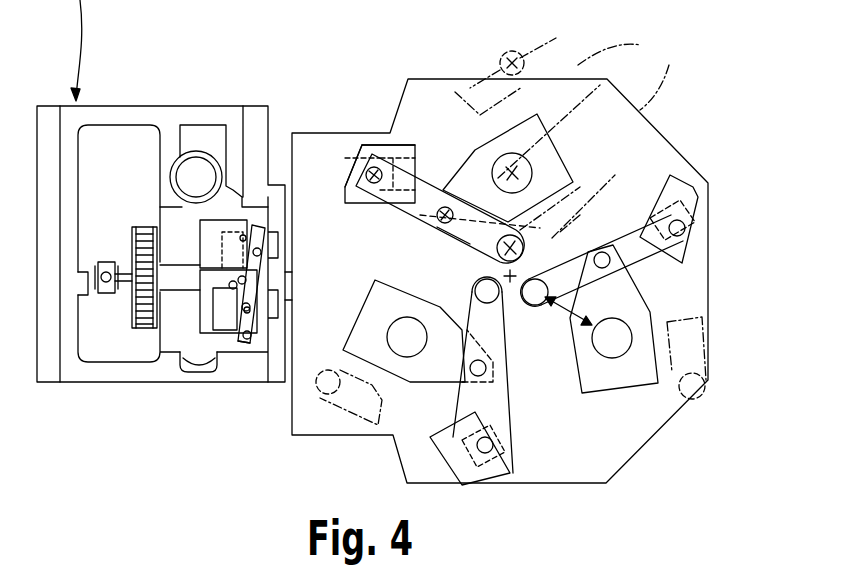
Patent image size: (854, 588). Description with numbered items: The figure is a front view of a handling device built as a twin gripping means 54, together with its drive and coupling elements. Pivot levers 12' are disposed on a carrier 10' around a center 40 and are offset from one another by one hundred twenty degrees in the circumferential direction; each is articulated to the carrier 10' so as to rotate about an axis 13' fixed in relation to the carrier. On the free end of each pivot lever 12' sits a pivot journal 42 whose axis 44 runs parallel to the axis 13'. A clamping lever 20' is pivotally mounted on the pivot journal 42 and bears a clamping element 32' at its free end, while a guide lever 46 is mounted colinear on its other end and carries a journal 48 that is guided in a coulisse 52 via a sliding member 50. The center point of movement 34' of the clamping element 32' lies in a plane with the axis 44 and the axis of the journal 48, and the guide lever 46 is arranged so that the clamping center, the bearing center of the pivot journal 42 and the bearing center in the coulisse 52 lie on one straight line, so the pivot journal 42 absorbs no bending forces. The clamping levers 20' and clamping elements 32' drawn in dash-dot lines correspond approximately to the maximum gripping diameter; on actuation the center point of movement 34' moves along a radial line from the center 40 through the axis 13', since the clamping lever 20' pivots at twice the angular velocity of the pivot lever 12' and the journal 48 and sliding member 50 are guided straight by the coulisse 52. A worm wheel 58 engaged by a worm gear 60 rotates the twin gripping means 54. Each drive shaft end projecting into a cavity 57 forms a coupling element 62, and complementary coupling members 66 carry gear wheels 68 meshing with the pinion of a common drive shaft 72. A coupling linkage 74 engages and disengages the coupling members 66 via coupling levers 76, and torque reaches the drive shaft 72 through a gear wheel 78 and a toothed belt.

The twin gripping means 54 is at (716, 248).
The worm gear 60 is at (197, 173).
The coupling linkage 74 is at (104, 308).
The gear wheel 78 is at (143, 328).
The drive shaft 72 is at (178, 282).
The cavity 57 is at (213, 252).
The worm wheel 58 is at (197, 373).
The coupling member 66 is at (243, 209).
The gear wheel 68 is at (238, 343).
The coupling lever 76 is at (240, 236).
The coupling element 62 is at (293, 295).
The journal 48 is at (358, 173).
The sliding member 50 is at (358, 145).
The coulisse 52 is at (380, 143).
The guide lever 46 is at (425, 197).
The pivot journal 42 is at (437, 227).
The axis 44 is at (420, 215).
The pivot lever 12' is at (521, 112).
The clamping lever 20' is at (486, 142).
The center 40 is at (511, 283).
The clamping element 32' is at (602, 154).
The center point of movement 34' is at (609, 132).
The axis 13' is at (616, 65).
The carrier 10' is at (666, 56).